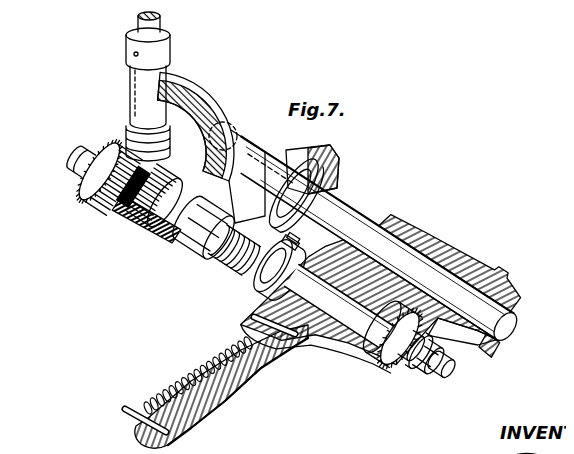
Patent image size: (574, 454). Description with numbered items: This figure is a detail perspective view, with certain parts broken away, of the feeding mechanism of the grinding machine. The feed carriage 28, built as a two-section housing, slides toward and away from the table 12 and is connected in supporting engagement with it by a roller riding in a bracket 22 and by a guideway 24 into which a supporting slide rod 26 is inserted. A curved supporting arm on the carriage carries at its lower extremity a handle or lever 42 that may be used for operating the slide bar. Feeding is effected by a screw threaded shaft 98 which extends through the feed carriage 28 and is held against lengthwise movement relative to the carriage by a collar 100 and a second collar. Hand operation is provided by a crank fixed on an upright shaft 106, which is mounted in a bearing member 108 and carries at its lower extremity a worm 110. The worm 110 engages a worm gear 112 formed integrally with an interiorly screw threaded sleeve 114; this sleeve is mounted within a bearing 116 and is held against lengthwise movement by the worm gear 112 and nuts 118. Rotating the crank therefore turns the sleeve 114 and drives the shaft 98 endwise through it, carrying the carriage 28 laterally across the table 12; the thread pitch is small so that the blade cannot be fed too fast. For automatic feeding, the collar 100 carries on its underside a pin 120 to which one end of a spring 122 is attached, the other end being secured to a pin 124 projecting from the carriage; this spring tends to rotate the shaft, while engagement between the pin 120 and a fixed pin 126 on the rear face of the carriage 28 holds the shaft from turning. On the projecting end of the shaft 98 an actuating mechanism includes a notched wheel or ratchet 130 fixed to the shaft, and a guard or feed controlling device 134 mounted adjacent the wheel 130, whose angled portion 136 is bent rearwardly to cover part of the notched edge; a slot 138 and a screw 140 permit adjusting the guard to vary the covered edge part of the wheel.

The table 12 is at (316, 170).
The bracket 22 is at (169, 68).
The guideway 24 is at (488, 338).
The supporting slide rod 26 is at (510, 320).
The feed carriage 28 is at (320, 322).
The handle or lever 42 is at (277, 15).
The screw threaded shaft 98 is at (264, 262).
The collar 100 is at (262, 290).
The upright shaft 106 is at (140, 20).
The bearing member 108 is at (187, 86).
The worm 110 is at (122, 128).
The worm gear 112 is at (83, 199).
The interiorly screw threaded sleeve 114 is at (112, 207).
The bearing 116 is at (138, 225).
The nuts 118 is at (187, 244).
The pin 120 is at (233, 327).
The spring 122 is at (172, 372).
The pin 124 is at (122, 405).
The fixed pin 126 is at (246, 309).
The notched wheel or ratchet 130 is at (373, 368).
The guard or feed controlling device 134 is at (388, 377).
The angled portion 136 is at (402, 310).
The slot 138 is at (398, 382).
The screw 140 is at (414, 364).